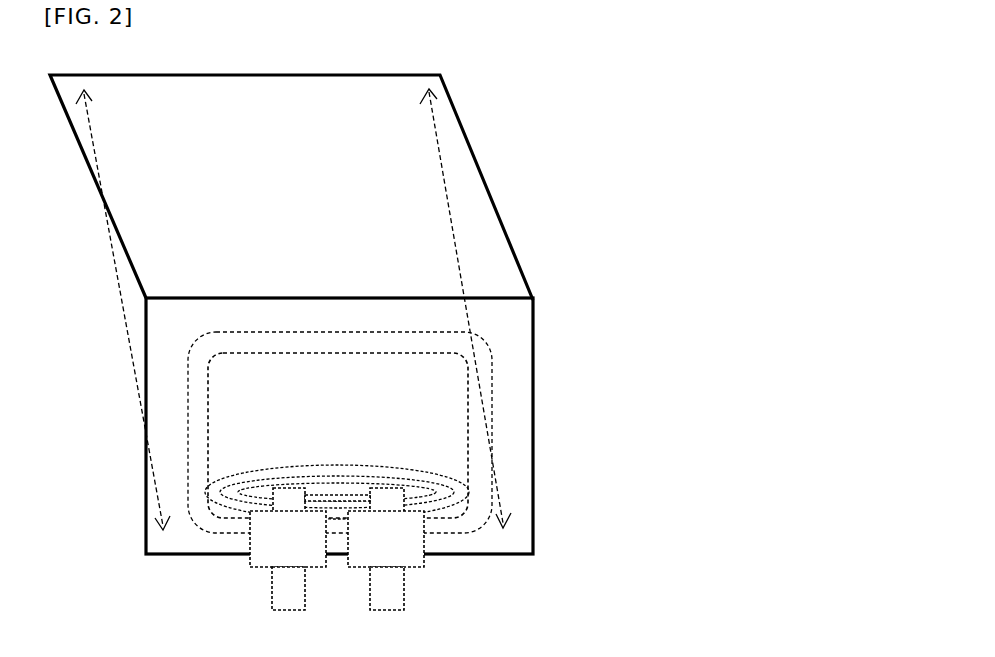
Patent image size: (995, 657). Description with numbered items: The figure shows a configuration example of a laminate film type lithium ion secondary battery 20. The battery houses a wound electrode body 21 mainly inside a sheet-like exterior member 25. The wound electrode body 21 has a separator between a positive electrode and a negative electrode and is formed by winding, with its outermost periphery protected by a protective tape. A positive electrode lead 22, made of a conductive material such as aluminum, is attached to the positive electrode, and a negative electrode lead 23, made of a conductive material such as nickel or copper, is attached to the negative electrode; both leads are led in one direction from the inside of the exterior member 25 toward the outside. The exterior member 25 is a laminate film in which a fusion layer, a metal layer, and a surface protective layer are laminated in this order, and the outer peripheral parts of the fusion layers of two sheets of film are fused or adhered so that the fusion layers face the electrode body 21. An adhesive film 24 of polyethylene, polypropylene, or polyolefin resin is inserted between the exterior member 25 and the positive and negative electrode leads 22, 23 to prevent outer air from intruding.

The laminate film type lithium ion secondary battery 20 is at (488, 90).
The wound electrode body 21 is at (425, 415).
The positive electrode lead 22 is at (283, 593).
The negative electrode lead 23 is at (385, 595).
The adhesive film 24 is at (410, 545).
The exterior member 25 is at (360, 193).